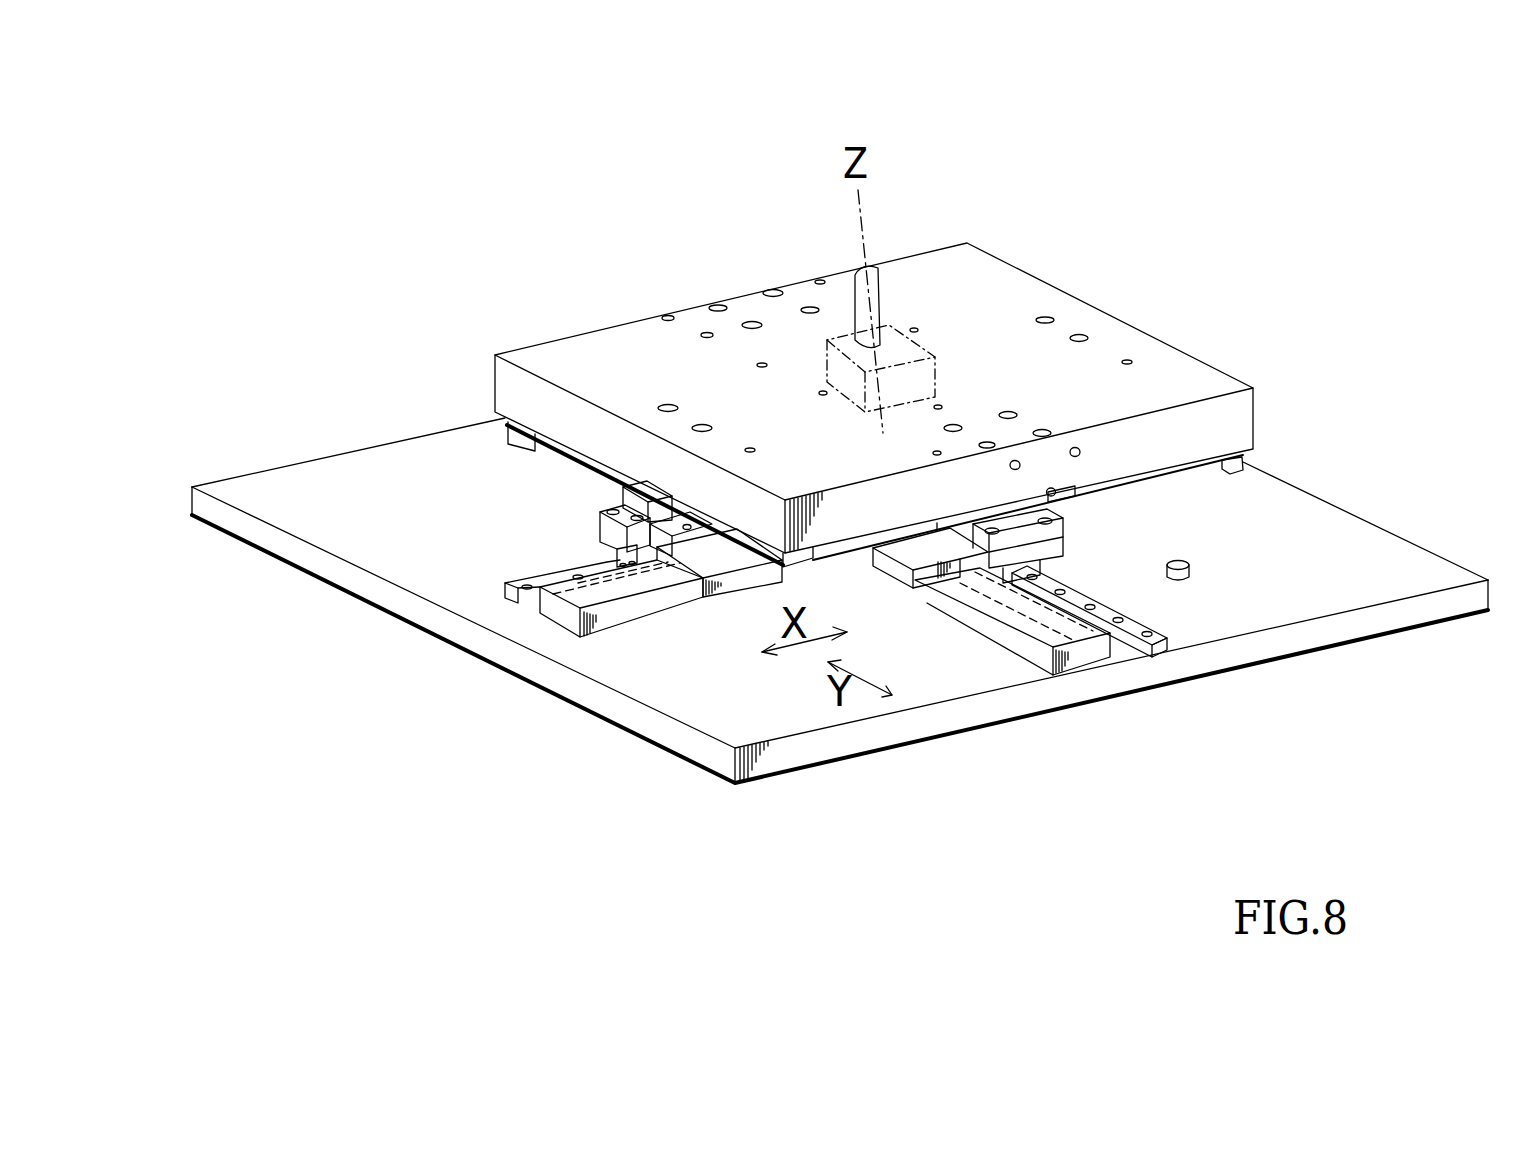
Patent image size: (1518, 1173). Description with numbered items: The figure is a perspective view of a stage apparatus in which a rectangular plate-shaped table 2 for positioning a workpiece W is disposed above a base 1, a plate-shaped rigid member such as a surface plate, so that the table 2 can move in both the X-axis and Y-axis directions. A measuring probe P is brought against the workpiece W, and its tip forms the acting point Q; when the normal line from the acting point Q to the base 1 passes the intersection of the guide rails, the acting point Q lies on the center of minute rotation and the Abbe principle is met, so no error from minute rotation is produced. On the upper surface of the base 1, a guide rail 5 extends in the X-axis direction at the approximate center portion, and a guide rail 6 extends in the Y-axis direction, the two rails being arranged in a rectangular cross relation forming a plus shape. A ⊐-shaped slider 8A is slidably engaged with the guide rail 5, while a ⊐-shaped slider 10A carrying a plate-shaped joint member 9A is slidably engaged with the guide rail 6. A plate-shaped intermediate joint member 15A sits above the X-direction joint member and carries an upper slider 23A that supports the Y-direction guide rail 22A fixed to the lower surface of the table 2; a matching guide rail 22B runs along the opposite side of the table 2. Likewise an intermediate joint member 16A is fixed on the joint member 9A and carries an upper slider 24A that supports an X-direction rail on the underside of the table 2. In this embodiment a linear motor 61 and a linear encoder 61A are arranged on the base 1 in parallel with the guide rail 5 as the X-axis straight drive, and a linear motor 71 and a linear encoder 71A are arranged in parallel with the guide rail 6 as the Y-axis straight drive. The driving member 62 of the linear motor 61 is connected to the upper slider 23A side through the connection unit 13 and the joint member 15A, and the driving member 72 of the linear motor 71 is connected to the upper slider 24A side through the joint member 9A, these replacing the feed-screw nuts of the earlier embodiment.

The base 1 is at (387, 467).
The table 2 is at (1177, 375).
The guide rail 5 is at (508, 605).
The guide rail 6 is at (1167, 652).
The slider 8A is at (613, 555).
The joint member 9A is at (1040, 550).
The slider 10A is at (1040, 567).
The connection unit 13 is at (613, 540).
The intermediate joint member 15A is at (617, 516).
The intermediate joint member 16A is at (1052, 527).
The guide rail 22A is at (508, 445).
The guide rail 22B is at (1240, 474).
The upper slider 23A is at (630, 502).
The upper slider 24A is at (1062, 499).
The linear motor 61 is at (574, 625).
The linear encoder 61A is at (637, 585).
The driving member 62 is at (737, 605).
The linear motor 71 is at (1080, 658).
The linear encoder 71A is at (1030, 645).
The driving member 72 is at (927, 575).
The measuring probe P is at (883, 274).
The acting point Q is at (877, 347).
The workpiece W is at (938, 343).